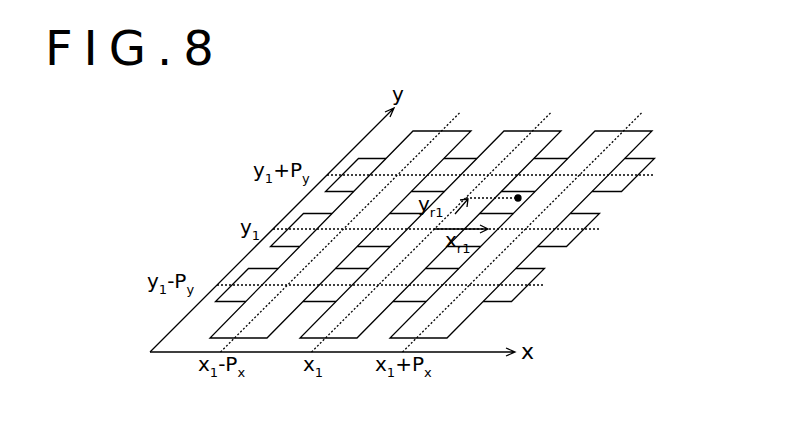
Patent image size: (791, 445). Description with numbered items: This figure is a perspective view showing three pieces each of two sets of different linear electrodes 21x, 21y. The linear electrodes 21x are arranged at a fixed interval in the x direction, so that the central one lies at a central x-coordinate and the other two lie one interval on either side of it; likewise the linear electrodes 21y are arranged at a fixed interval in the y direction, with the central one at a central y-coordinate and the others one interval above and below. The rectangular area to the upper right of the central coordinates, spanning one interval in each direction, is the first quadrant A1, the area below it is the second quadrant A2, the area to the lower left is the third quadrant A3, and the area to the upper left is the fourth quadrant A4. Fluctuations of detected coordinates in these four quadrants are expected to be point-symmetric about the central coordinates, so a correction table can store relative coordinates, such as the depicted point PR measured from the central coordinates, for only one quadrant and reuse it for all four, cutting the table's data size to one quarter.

The linear electrodes 21x is at (618, 137).
The linear electrodes 21y is at (641, 165).
The first quadrant A1 is at (495, 182).
The second quadrant A2 is at (459, 274).
The third quadrant A3 is at (347, 272).
The fourth quadrant A4 is at (441, 182).
The depicted coordinates PR is at (507, 190).